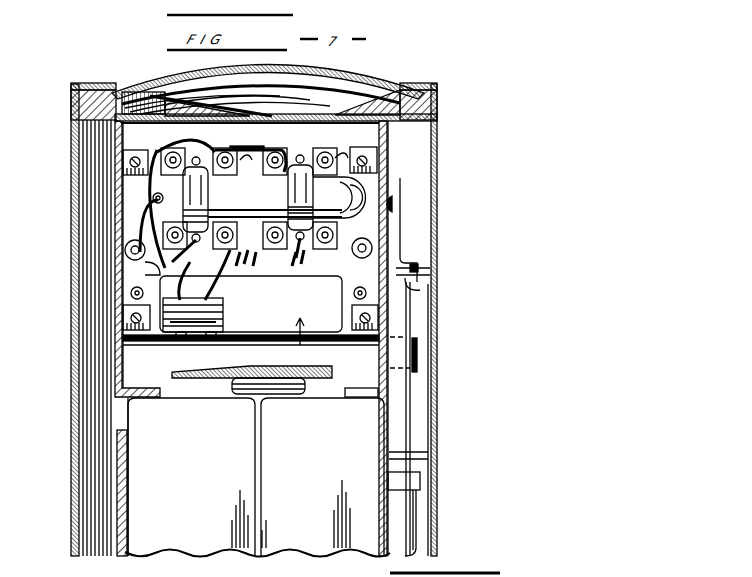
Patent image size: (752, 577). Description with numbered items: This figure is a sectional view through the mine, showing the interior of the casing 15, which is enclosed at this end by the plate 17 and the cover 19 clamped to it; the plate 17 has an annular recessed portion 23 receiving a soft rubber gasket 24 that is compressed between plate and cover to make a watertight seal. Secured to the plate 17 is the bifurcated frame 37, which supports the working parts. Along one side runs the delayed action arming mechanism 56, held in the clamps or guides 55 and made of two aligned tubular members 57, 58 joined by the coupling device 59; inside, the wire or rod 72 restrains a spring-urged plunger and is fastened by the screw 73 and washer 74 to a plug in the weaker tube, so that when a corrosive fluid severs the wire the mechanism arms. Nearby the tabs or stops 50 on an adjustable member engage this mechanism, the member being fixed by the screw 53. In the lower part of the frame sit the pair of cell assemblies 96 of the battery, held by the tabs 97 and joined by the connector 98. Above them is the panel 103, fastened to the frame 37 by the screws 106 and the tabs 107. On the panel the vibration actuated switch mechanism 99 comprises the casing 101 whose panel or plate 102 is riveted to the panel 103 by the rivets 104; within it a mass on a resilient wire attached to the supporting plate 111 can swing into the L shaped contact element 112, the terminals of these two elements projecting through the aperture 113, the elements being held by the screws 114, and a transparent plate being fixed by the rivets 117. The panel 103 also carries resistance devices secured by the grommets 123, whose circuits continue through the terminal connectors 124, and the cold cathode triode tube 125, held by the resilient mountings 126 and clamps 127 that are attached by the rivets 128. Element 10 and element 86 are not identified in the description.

The housing 10 is at (441, 173).
The casing 15 is at (73, 494).
The plate 17 is at (438, 118).
The cover 19 is at (350, 77).
The annular recessed portion 23 is at (72, 100).
The gasket 24 is at (437, 101).
The bifurcated frame 37 is at (394, 139).
The tabs or stops 50 is at (418, 355).
The screw 53 is at (401, 198).
The clamps or guides 55 is at (421, 482).
The delayed action arming mechanism 56 is at (421, 511).
The tubular member 57 is at (414, 532).
The tubular member 58 is at (430, 400).
The coupling device 59 is at (420, 460).
The wire or rod 72 is at (421, 288).
The screw 73 is at (420, 268).
The washer 74 is at (422, 275).
The arm 86 is at (400, 262).
The cell assemblies 96 is at (257, 477).
The tabs 97 is at (141, 398).
The connector 98 is at (325, 372).
The vibration actuated switch mechanism 99 is at (307, 339).
The casing 101 is at (251, 304).
The panel or plate 102 is at (146, 269).
The panel 103 is at (116, 213).
The rivets 104 is at (125, 251).
The screws 106 is at (129, 162).
The tabs 107 is at (152, 151).
The supporting plate 111 is at (223, 302).
The L shaped contact element 112 is at (180, 333).
The aperture 113 is at (223, 320).
The screws 114 is at (210, 338).
The rivets 117 is at (131, 293).
The grommets 123 is at (255, 153).
The terminal connectors 124 is at (164, 237).
The triode tube 125 is at (339, 197).
The resilient mountings 126 is at (285, 196).
The clamps 127 is at (183, 178).
The rivets 128 is at (198, 152).